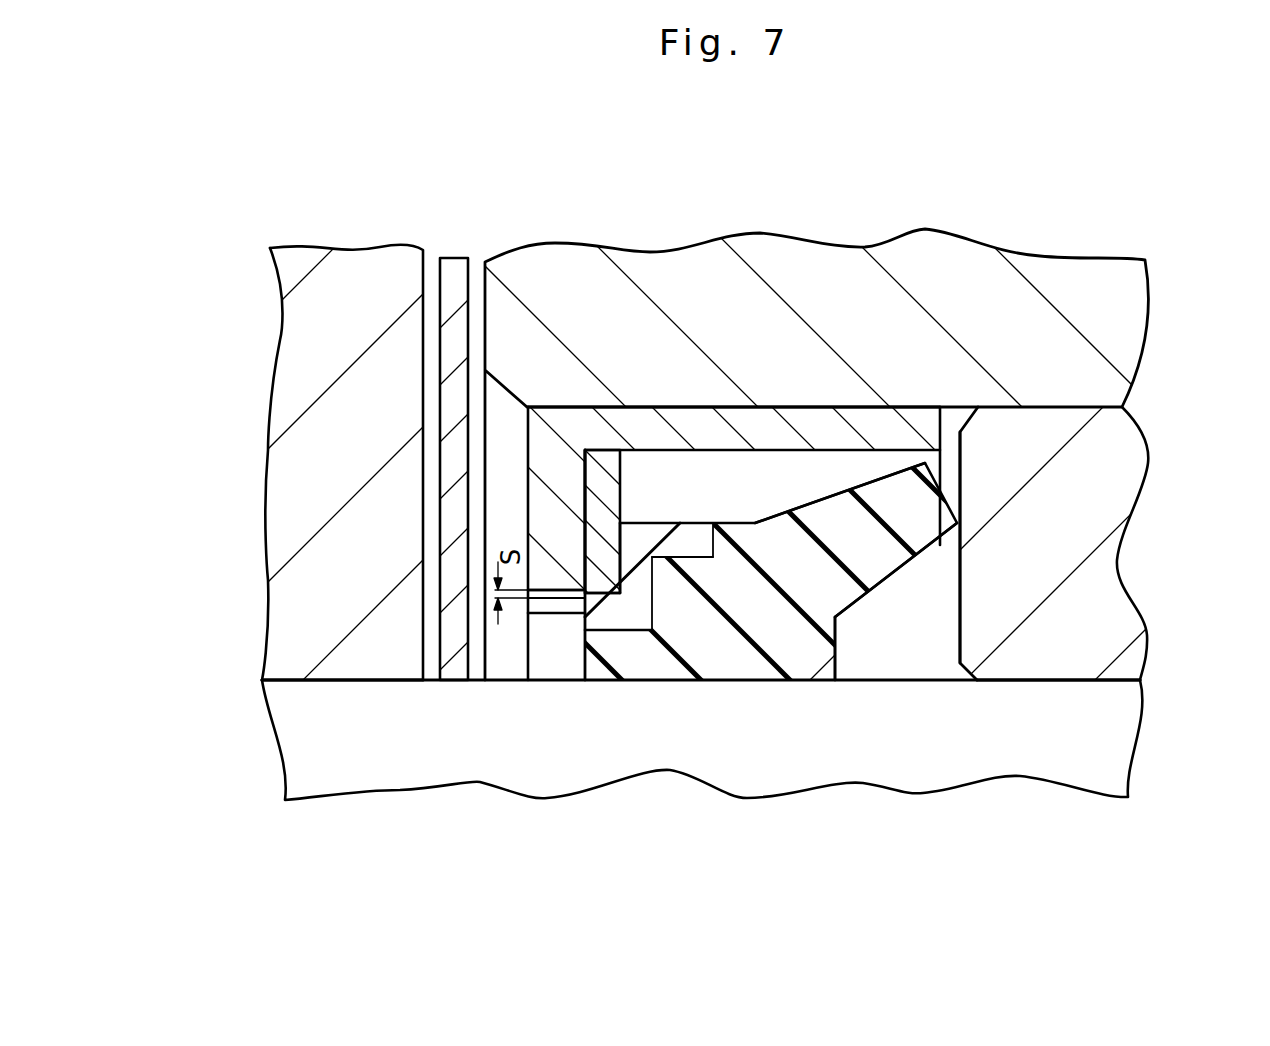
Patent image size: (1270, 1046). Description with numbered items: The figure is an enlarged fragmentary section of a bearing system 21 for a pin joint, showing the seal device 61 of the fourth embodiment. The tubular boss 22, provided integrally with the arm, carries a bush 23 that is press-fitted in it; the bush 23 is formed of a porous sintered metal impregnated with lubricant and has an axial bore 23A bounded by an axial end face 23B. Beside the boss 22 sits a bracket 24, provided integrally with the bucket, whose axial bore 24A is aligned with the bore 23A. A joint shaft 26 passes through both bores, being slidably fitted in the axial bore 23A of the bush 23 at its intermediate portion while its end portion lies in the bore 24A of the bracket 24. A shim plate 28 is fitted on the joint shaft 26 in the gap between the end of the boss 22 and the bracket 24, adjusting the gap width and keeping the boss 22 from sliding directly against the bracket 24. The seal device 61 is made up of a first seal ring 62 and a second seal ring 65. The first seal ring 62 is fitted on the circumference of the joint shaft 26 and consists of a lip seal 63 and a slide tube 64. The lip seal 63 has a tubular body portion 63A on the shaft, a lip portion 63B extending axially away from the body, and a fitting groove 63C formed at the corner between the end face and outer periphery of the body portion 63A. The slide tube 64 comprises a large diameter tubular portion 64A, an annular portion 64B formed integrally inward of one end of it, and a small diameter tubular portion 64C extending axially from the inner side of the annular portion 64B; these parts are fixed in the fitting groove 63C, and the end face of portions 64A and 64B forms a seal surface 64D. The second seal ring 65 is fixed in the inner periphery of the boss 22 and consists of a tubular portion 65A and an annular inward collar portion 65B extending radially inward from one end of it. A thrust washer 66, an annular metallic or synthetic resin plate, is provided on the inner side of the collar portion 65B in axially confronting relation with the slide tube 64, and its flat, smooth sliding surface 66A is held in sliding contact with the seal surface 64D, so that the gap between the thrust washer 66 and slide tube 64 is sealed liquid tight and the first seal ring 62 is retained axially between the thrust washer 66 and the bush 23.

The bearing system 21 is at (803, 389).
The boss member 22 is at (1051, 272).
The bush 23 is at (1097, 535).
The axial bore 23A is at (1100, 682).
The axial end face 23B is at (960, 603).
The bracket 24 is at (303, 330).
The axial bore 24A is at (302, 683).
The joint shaft 26 is at (328, 775).
The shim plate 28 is at (452, 268).
The seal device 61 is at (867, 407).
The first seal ring 62 is at (778, 512).
The lip seal 63 is at (843, 632).
The tubular body portion 63A is at (783, 648).
The lip portion 63B is at (920, 517).
The fitting groove 63C is at (652, 612).
The slide tube 64 is at (662, 524).
The large diameter tubular portion 64A is at (730, 622).
The annular portion 64B is at (632, 625).
The small diameter tubular portion 64C is at (598, 622).
The seal surface 64D is at (612, 548).
The second seal ring 65 is at (750, 428).
The tubular portion 65A is at (920, 427).
The annular inward collar portion 65B is at (558, 612).
The thrust washer 66 is at (603, 495).
The sliding surface 66A is at (622, 553).